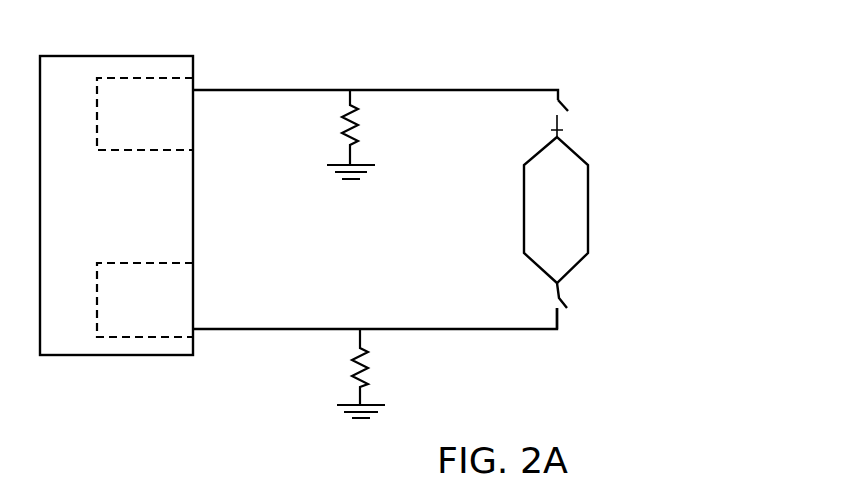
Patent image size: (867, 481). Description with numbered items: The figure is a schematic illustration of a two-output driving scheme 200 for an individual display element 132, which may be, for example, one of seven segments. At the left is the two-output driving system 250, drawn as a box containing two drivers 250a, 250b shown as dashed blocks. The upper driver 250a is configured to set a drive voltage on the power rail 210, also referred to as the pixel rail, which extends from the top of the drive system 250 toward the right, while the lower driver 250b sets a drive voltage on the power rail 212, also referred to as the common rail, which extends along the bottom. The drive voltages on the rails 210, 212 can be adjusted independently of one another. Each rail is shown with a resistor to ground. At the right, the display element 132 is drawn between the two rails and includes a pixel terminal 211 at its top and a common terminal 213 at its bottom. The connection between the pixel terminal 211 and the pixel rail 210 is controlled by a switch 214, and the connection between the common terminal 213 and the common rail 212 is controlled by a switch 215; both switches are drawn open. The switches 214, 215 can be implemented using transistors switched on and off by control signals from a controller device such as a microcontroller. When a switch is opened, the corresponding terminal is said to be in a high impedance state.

The switching circuit 200 is at (700, 92).
The two-output driving system 250 is at (59, 342).
The driver 250a is at (123, 97).
The driver 250b is at (163, 323).
The power rail 210 is at (470, 88).
The power rail 212 is at (447, 333).
The switch 214 is at (568, 112).
The switch 215 is at (563, 310).
The pixel terminal 211 is at (562, 130).
The common terminal 213 is at (562, 287).
The display element 132 is at (572, 217).